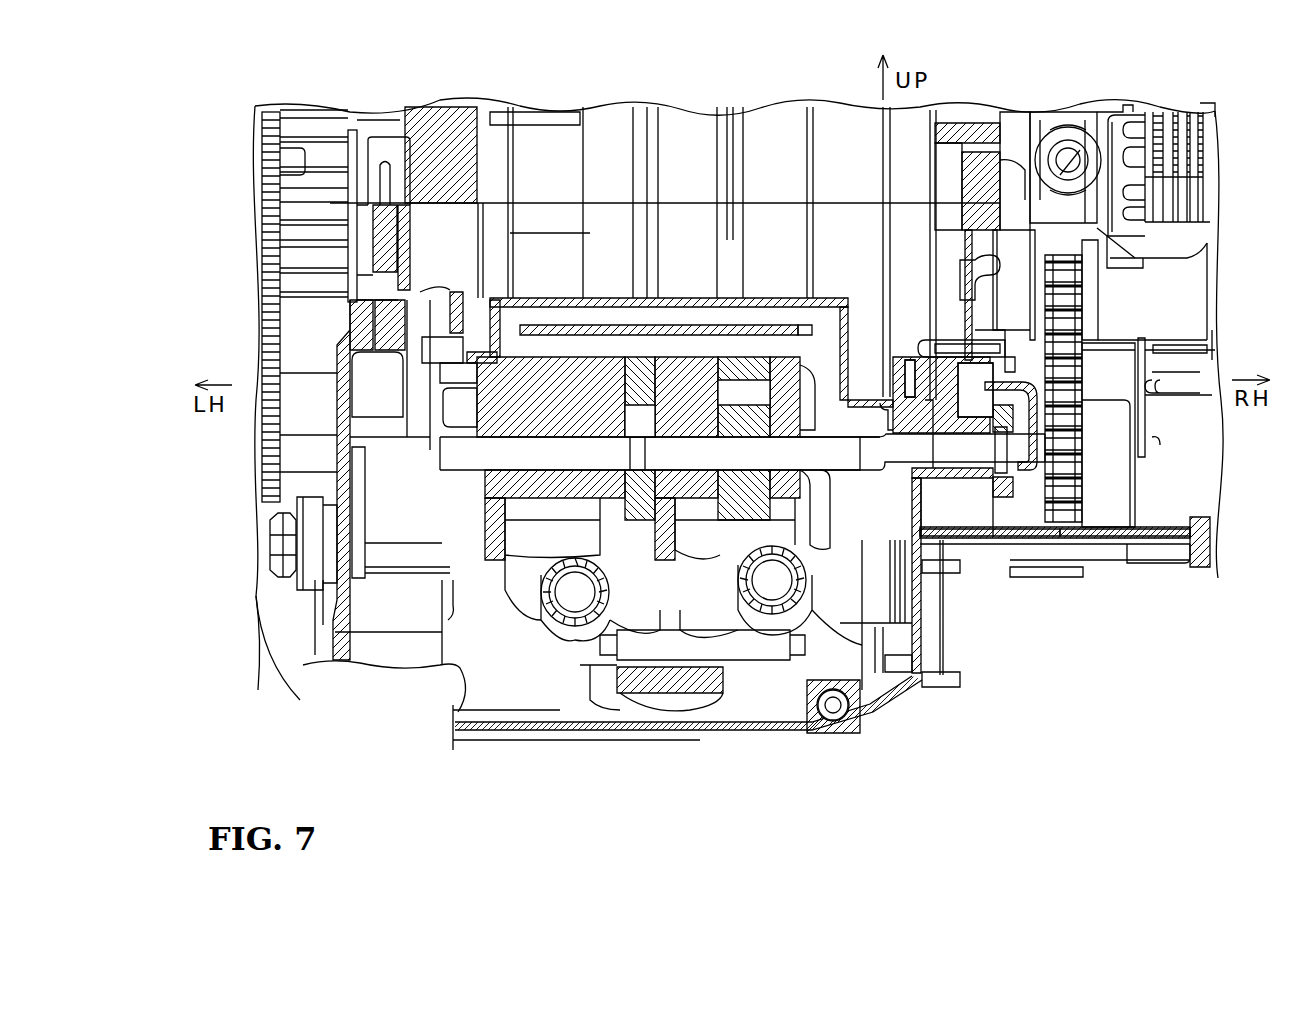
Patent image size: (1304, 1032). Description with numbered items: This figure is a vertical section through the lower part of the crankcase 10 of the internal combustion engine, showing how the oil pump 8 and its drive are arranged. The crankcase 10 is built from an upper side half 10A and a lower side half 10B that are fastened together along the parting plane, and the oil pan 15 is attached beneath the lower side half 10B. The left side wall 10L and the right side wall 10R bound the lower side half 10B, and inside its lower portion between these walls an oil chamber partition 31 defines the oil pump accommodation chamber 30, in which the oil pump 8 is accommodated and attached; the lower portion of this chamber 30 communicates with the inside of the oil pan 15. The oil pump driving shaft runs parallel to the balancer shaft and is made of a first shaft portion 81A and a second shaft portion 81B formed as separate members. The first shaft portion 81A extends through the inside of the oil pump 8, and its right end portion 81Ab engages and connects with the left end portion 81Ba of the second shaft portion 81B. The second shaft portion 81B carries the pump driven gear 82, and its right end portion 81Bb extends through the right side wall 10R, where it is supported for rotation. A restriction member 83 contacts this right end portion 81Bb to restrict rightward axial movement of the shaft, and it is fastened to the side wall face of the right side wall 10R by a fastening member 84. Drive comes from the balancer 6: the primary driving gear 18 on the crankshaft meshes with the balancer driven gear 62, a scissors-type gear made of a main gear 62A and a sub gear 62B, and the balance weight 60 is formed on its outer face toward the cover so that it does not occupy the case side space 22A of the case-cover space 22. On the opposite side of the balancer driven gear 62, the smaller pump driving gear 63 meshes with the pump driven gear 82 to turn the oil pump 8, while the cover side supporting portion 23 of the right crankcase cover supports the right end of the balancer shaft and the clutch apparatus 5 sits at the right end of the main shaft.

The clutch apparatus 5 is at (1224, 158).
The balancer 6 is at (1160, 469).
The oil pump 8 is at (820, 605).
The crankcase 10 is at (705, 62).
The upper side half 10A is at (600, 148).
The lower side half 10B is at (689, 225).
The left side wall 10L is at (330, 553).
The right side wall 10R is at (968, 480).
The oil pan 15 is at (748, 730).
The primary driving gear 18 is at (1110, 297).
The case-cover space 22 is at (1156, 329).
The case side space 22A is at (1000, 310).
The cover side supporting portion 23 is at (1157, 342).
The oil pump accommodation chamber 30 is at (691, 352).
The oil chamber partition 31 is at (795, 298).
The balance weight 60 is at (1123, 495).
The balancer driven gear 62 is at (1192, 703).
The main gear 62A is at (1100, 547).
The sub gear 62B is at (1060, 545).
The pump driving gear 63 is at (1013, 350).
The first shaft portion 81A is at (575, 462).
The right end portion of the first shaft portion 81Ab is at (835, 472).
The second shaft portion 81B is at (943, 480).
The left end portion of the second shaft portion 81Ba is at (868, 472).
The right end portion of the second shaft portion 81Bb is at (1030, 470).
The pump driven gear 82 is at (1005, 490).
The restriction member 83 is at (1042, 442).
The fastening member 84 is at (985, 330).